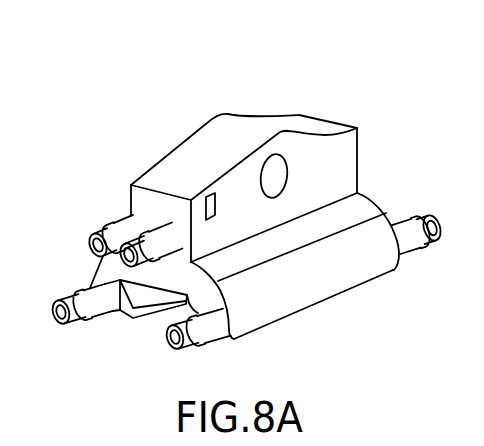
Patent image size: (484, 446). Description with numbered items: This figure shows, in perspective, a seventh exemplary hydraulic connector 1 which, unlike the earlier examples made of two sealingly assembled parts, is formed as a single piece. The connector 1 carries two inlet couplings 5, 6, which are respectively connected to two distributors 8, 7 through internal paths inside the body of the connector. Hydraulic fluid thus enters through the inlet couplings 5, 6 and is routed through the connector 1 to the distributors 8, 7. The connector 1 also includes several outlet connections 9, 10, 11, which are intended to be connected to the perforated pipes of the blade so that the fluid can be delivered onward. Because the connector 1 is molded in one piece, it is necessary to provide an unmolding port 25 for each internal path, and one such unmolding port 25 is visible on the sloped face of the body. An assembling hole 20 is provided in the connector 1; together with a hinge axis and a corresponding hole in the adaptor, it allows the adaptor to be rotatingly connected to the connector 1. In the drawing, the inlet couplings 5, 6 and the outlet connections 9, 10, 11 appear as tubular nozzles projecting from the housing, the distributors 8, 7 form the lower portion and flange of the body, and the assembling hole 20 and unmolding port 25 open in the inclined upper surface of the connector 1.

The hydraulic connector 1 is at (271, 97).
The inlet coupling 5 is at (150, 252).
The inlet coupling 6 is at (103, 230).
The distributor 7 is at (237, 344).
The distributor 8 is at (125, 326).
The outlet connection 9 is at (173, 343).
The outlet connection 10 is at (69, 297).
The outlet connection 11 is at (420, 215).
The assembling hole 20 is at (277, 169).
The unmolding port 25 is at (213, 206).